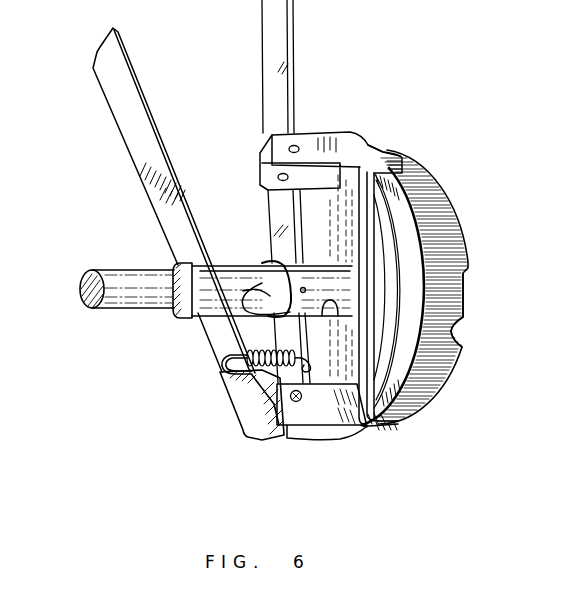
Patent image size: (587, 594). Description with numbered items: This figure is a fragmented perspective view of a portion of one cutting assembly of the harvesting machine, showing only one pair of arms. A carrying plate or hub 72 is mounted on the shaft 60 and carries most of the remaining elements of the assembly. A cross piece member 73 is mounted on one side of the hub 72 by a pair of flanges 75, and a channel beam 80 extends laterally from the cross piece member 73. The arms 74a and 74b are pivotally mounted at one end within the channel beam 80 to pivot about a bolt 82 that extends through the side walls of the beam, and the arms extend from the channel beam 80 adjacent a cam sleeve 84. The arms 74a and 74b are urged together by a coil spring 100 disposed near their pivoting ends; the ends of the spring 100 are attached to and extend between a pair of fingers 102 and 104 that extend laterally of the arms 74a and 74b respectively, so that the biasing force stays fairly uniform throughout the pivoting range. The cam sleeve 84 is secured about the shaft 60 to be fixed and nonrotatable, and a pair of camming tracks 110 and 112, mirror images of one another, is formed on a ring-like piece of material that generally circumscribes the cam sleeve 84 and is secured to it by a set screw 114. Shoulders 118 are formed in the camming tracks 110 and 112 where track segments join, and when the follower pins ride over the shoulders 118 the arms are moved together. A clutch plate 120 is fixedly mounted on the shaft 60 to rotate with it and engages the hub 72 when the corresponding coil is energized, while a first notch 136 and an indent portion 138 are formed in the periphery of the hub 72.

The shaft 60 is at (133, 295).
The hub 72 is at (397, 232).
The cross piece member 73 is at (360, 277).
The arm 74a is at (113, 88).
The arm 74b is at (293, 113).
The flanges 75 is at (385, 158).
The channel beam 80 is at (272, 137).
The bolt 82 is at (303, 426).
The cam sleeve 84 is at (186, 262).
The spring 100 is at (247, 403).
The finger 102 is at (247, 377).
The finger 104 is at (373, 420).
The camming track 110 is at (240, 263).
The camming track 112 is at (308, 262).
The set screw 114 is at (257, 290).
The shoulders 118 is at (228, 340).
The clutch plate 120 is at (380, 349).
The notch 136 is at (452, 332).
The indent portion 138 is at (465, 295).